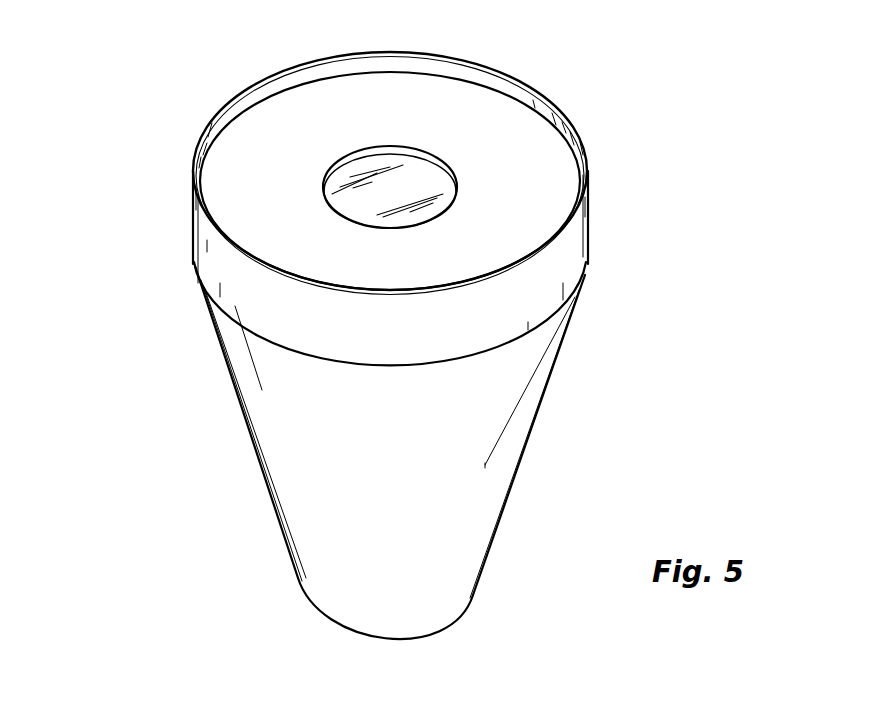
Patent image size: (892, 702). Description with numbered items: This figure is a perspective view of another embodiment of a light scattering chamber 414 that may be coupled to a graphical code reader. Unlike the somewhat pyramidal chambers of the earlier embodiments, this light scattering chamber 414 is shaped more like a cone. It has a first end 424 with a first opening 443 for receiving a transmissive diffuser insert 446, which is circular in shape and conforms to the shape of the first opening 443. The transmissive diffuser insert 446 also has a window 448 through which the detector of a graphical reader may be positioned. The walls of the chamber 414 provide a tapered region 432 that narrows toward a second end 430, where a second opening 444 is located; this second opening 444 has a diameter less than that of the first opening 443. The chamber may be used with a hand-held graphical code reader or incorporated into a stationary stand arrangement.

The light scattering chamber 414 is at (409, 356).
The first end 424 is at (578, 238).
The second end 430 is at (330, 592).
The tapered region 432 is at (275, 408).
The first opening 443 is at (217, 127).
The second opening 444 is at (447, 625).
The transmissive diffuser insert 446 is at (519, 155).
The window 448 is at (343, 210).